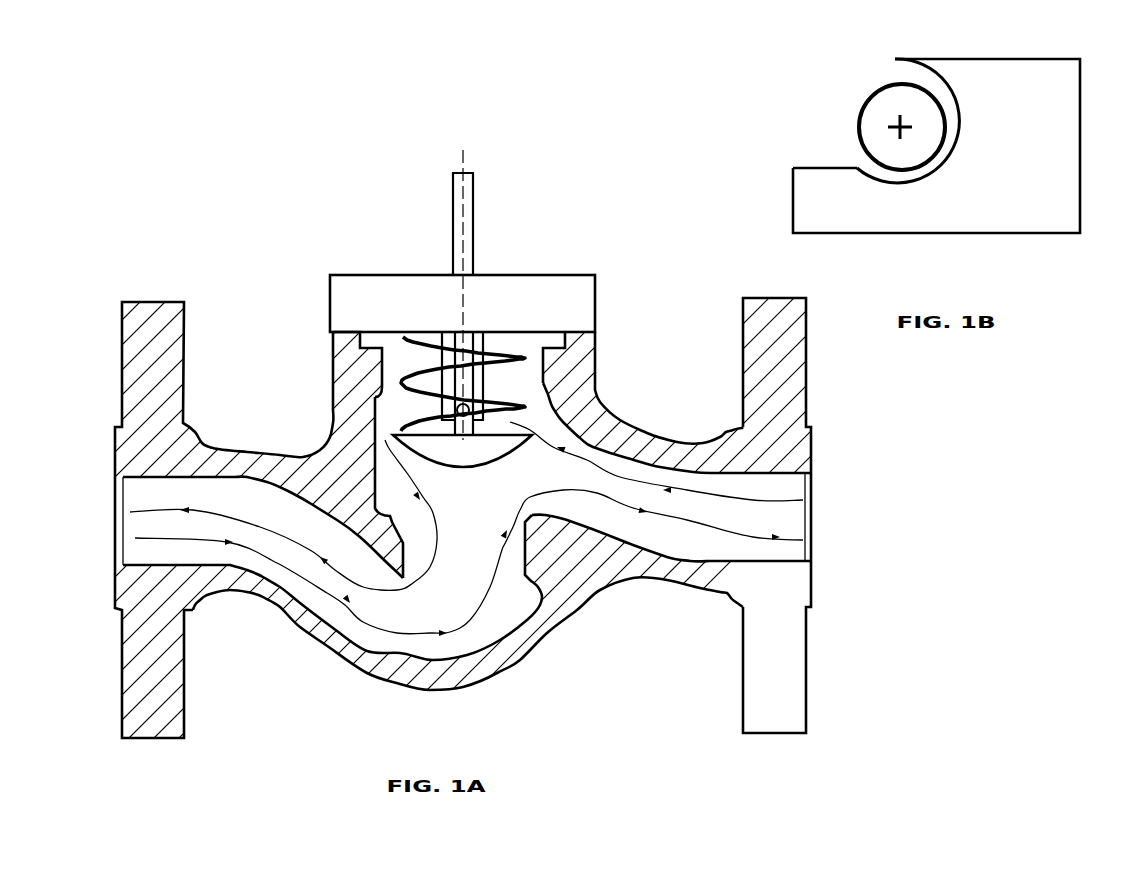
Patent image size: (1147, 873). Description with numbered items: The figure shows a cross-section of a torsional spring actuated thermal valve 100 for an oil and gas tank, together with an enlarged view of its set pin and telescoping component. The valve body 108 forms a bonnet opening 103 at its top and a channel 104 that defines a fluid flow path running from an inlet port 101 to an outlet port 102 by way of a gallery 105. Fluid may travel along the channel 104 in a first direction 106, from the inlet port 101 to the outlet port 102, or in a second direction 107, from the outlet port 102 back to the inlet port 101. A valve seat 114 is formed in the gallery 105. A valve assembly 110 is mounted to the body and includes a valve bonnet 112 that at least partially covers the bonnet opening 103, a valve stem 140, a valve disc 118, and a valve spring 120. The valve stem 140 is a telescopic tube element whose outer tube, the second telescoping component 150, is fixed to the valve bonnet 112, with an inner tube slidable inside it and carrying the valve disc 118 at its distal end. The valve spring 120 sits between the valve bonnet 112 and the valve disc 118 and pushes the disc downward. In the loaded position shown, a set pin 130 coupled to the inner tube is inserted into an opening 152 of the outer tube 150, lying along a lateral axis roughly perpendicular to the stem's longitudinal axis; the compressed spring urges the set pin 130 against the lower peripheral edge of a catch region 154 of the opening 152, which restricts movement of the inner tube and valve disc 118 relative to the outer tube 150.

In FIG. 1A, the valve 100 is at (580, 668).
In FIG. 1A, the inlet port 101 is at (817, 555).
In FIG. 1A, the outlet port 102 is at (105, 560).
In FIG. 1A, the bonnet opening 103 is at (554, 340).
In FIG. 1A, the channel 104 is at (133, 497).
In FIG. 1A, the gallery 105 is at (452, 548).
In FIG. 1A, the first direction 106 is at (790, 538).
In FIG. 1A, the second direction 107 is at (787, 500).
In FIG. 1A, the valve body 108 is at (807, 355).
In FIG. 1A, the valve assembly 110 is at (518, 270).
In FIG. 1A, the valve bonnet 112 is at (565, 275).
In FIG. 1A, the valve seat 114 is at (412, 548).
In FIG. 1A, the valve disc 118 is at (450, 462).
In FIG. 1A, the valve spring 120 is at (527, 360).
In FIG. 1A, the set pin 130 is at (456, 409).
In FIG. 1B, the set pin 130 is at (858, 108).
In FIG. 1A, the valve stem 140 is at (436, 355).
In FIG. 1B, the second telescoping component 150 is at (996, 157).
In FIG. 1B, the opening 152 is at (892, 180).
In FIG. 1B, the catch region 154 is at (857, 167).